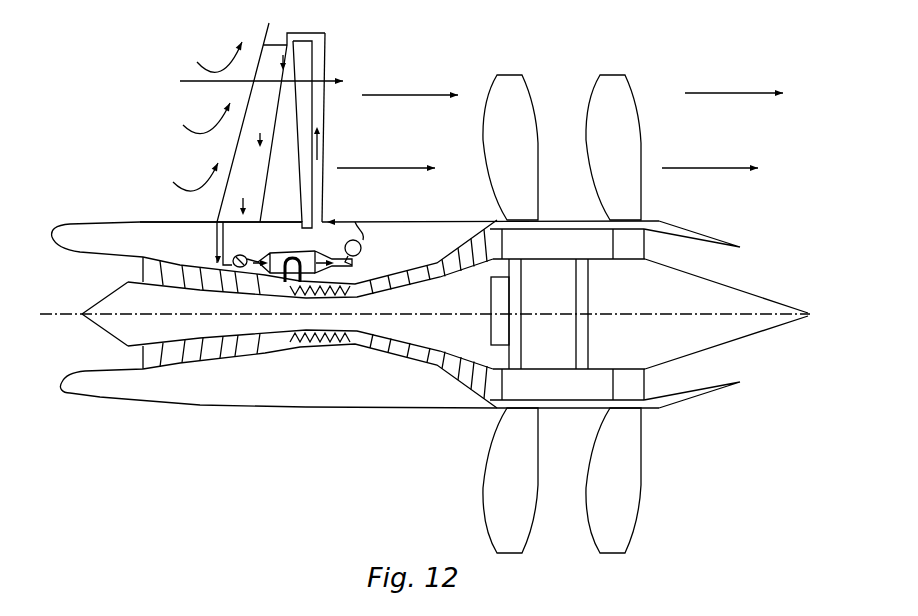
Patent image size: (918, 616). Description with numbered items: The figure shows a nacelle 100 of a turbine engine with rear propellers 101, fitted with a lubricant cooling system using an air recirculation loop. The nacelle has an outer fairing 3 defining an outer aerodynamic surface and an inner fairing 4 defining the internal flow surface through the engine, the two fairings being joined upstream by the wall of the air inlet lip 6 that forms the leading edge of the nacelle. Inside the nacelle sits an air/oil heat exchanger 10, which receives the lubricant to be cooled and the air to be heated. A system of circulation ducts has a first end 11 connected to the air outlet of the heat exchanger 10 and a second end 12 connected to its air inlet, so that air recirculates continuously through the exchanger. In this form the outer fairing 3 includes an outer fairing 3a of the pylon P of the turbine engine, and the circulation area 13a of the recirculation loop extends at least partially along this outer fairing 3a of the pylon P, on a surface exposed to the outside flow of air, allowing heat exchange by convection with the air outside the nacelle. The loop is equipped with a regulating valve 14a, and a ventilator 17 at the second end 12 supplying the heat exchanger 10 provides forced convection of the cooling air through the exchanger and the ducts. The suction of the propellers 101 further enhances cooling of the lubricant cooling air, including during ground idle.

The outer fairing 3 is at (141, 222).
The outer fairing of the pylon 3a is at (250, 95).
The inner fairing 4 is at (95, 255).
The air inlet lip 6 is at (50, 237).
The heat exchanger 10 is at (290, 280).
The first end 11 is at (320, 270).
The second end 12 is at (268, 268).
The circulation area 13a is at (277, 107).
The regulating valve 14a is at (362, 242).
The ventilator 17 is at (243, 255).
The nacelle 100 is at (313, 427).
The rear propellers 101 is at (517, 93).
The pylon P is at (362, 50).